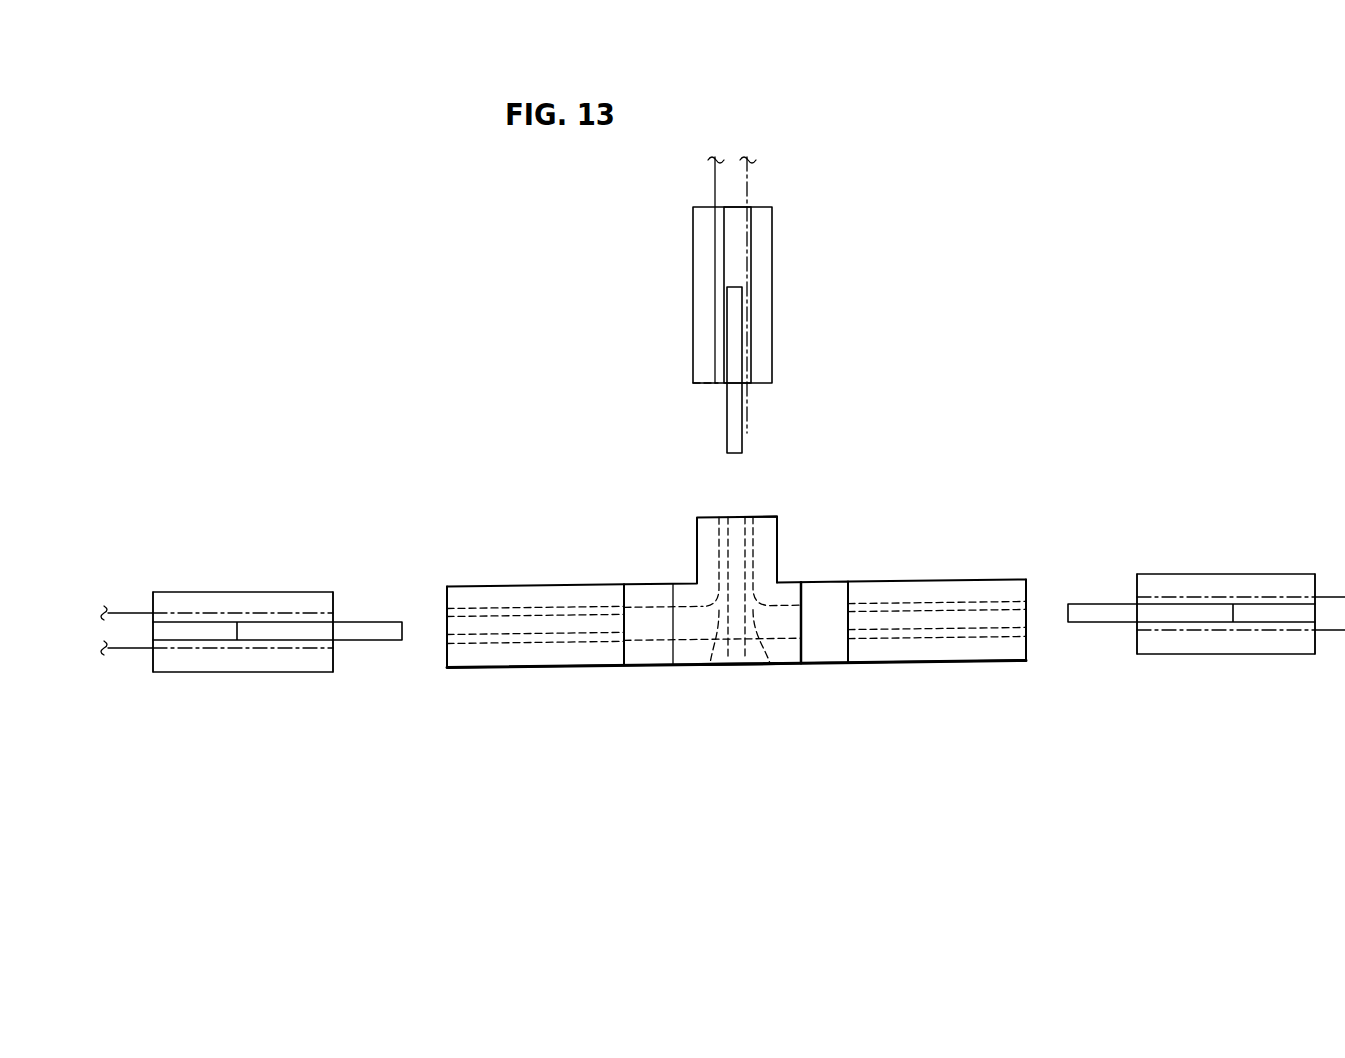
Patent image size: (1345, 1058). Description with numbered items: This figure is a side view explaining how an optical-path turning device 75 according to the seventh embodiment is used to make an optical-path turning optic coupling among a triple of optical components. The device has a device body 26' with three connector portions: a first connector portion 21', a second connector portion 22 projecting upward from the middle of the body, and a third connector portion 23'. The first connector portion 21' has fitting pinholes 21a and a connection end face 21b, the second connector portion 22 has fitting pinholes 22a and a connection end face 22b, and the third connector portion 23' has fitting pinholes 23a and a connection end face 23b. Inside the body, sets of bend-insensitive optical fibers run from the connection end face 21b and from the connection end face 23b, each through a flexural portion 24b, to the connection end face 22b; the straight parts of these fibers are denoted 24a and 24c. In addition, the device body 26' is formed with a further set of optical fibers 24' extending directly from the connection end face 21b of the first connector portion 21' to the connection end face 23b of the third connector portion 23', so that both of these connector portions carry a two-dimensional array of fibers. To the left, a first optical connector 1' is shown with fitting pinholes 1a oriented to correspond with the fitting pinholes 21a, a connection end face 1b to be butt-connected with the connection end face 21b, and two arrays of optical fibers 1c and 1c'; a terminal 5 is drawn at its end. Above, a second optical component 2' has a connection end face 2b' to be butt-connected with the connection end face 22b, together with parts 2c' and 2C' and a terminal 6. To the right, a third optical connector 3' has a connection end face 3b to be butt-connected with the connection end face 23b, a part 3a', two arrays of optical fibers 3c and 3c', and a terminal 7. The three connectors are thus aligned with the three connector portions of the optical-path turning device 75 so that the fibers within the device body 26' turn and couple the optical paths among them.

The first optical connector 1' is at (217, 581).
The fitting pinholes 1a is at (175, 622).
The connection end face 1b is at (335, 600).
The optical fibers 1c is at (220, 564).
The optical fibers 1c' is at (220, 696).
The first terminal 5 is at (376, 643).
The second optical component 2' is at (685, 270).
The connection end face 2b' is at (693, 419).
The second connector contact 2c' is at (658, 270).
The second connector contact 2C' is at (787, 295).
The second terminal 6 is at (744, 432).
The first connector portion 21' is at (736, 595).
The fitting pinholes 21a is at (560, 614).
The connection end face 21b is at (447, 590).
The second connector portion 22 is at (697, 528).
The fitting pinholes 22a is at (744, 650).
The connection end face 22b is at (760, 517).
The third connector portion 23' is at (937, 589).
The fitting pinholes 23a is at (990, 606).
The connection end face 23b is at (1028, 580).
The straight part 24a is at (472, 640).
The flexural portion 24b is at (710, 660).
The straight part 24c is at (719, 556).
The optical fibers 24' is at (535, 692).
The device body 26' is at (712, 708).
The optical-path turning device 75 is at (879, 480).
The third optical connector 3' is at (1226, 563).
The third connector housing portion 3a' is at (1291, 581).
The connection end face 3b is at (1137, 578).
The optical fibers 3c is at (1241, 548).
The optical fibers 3c' is at (1241, 680).
The third terminal 7 is at (1092, 632).